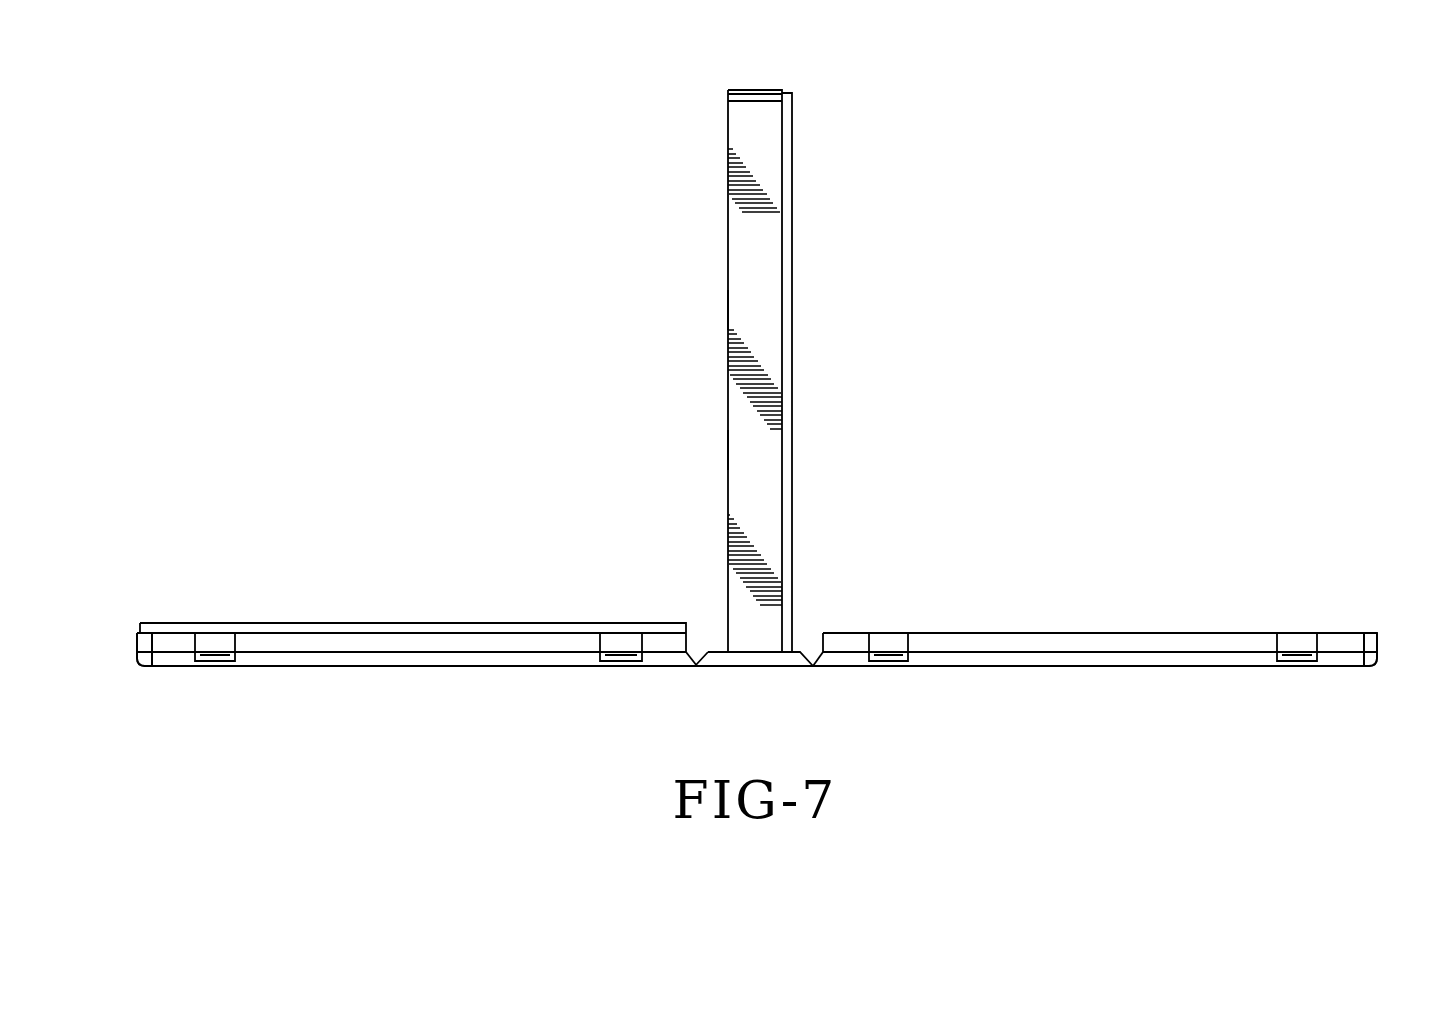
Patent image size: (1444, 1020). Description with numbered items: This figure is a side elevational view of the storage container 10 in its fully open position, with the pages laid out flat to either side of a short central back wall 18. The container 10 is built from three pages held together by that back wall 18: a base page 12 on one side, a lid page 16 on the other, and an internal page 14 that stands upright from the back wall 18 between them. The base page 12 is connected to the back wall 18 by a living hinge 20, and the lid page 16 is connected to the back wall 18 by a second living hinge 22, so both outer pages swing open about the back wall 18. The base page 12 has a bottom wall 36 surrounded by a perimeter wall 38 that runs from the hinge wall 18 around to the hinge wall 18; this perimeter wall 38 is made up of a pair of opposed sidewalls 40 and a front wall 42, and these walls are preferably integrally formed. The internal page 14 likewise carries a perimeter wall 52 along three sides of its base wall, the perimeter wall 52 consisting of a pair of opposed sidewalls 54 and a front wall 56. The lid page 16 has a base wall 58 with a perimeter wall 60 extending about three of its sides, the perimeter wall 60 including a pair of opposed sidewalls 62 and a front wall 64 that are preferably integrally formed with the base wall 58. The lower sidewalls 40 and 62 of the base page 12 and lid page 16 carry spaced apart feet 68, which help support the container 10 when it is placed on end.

The storage container 10 is at (990, 391).
The base page 12 is at (1190, 667).
The internal page 14 is at (728, 268).
The lid page 16 is at (497, 667).
The back wall 18 is at (745, 667).
The living hinge 20 is at (812, 662).
The second living hinge 22 is at (698, 662).
The bottom wall 36 is at (993, 667).
The perimeter wall 38 is at (1066, 638).
The sidewalls 40 is at (1112, 645).
The front wall 42 is at (1380, 637).
The perimeter wall 52 is at (735, 450).
The sidewalls 54 is at (750, 312).
The front wall 56 is at (754, 89).
The base wall 58 is at (308, 667).
The perimeter wall 60 is at (383, 637).
The sidewalls 62 is at (413, 645).
The front wall 64 is at (137, 638).
The feet 68 is at (623, 640).